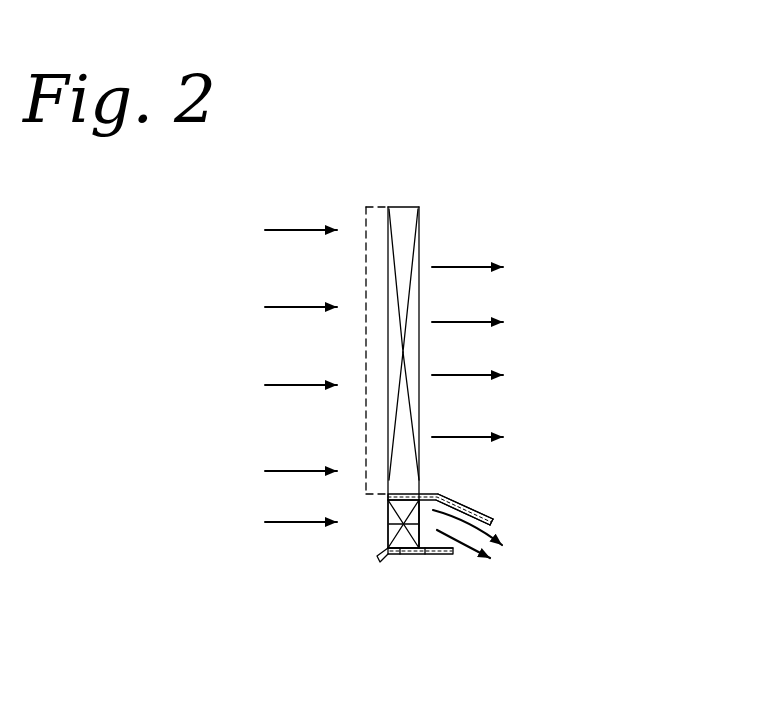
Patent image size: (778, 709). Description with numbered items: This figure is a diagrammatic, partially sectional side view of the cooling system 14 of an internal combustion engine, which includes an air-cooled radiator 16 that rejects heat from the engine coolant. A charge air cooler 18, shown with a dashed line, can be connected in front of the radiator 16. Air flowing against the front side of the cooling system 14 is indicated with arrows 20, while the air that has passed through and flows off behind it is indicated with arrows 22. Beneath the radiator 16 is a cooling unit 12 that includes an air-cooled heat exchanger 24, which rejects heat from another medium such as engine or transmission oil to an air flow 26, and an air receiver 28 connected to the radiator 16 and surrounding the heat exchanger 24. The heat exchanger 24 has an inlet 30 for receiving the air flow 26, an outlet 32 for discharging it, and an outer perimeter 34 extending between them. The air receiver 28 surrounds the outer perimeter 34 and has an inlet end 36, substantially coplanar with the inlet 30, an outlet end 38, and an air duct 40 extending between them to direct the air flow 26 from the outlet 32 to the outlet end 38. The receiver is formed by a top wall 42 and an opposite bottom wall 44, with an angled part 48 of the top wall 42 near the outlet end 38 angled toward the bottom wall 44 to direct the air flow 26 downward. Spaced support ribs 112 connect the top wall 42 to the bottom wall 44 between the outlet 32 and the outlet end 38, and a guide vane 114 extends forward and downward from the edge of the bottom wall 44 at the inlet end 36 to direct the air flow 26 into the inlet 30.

The cooling unit 12 is at (468, 580).
The cooling system 14 is at (441, 206).
The air-cooled radiator 16 is at (403, 234).
The charge air cooler 18 is at (373, 277).
The arrows 20 is at (305, 386).
The arrows 22 is at (458, 433).
The air-cooled heat exchanger 24 is at (392, 548).
The air flow 26 is at (288, 523).
The air receiver 28 is at (422, 555).
The inlet 30 is at (393, 523).
The outlet 32 is at (430, 533).
The outer perimeter 34 is at (413, 557).
The inlet end 36 is at (390, 496).
The outlet end 38 is at (466, 536).
The air duct 40 is at (421, 533).
The top wall 42 is at (393, 494).
The bottom wall 44 is at (400, 557).
The angled part 48 is at (490, 518).
The support ribs 112 is at (450, 502).
The guide vane 114 is at (379, 558).